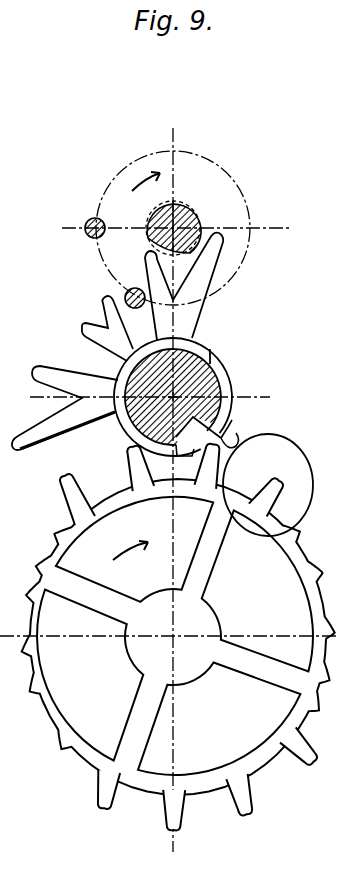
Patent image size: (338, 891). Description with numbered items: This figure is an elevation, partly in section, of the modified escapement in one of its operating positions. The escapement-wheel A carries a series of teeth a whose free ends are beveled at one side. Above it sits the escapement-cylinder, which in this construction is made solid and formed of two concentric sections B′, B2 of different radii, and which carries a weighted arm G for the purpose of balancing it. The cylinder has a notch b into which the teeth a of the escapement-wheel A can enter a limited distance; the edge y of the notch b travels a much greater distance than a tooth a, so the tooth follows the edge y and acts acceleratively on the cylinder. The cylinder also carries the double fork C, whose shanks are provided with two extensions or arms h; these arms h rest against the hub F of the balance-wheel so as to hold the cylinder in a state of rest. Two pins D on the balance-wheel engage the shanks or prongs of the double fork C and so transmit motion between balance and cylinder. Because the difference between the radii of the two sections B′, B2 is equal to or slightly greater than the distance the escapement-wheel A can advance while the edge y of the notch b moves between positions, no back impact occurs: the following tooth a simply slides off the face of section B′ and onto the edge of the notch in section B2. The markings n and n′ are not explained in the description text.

The escapement-wheel A is at (178, 652).
The teeth a is at (173, 468).
The notch b is at (178, 452).
The concentric cylinder section B′ is at (206, 347).
The concentric cylinder section B2 is at (120, 432).
The double fork C is at (107, 328).
The pins D is at (92, 241).
The hub F is at (177, 222).
The weighted arm G is at (268, 485).
The arms h is at (117, 341).
The notch n is at (232, 422).
The pin n′ is at (213, 354).
The edge y is at (235, 446).